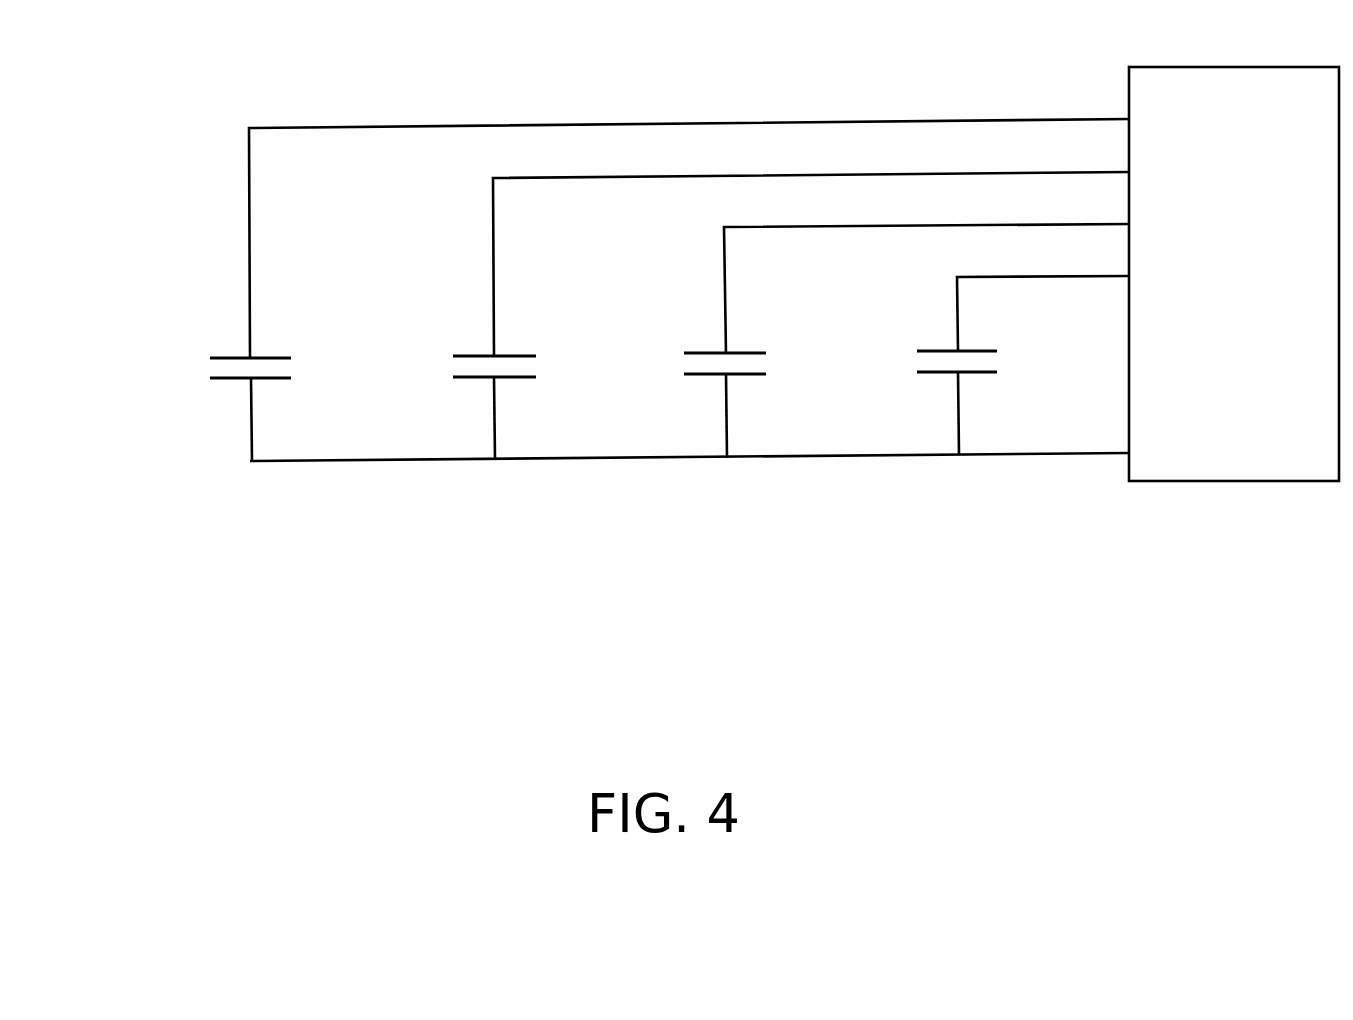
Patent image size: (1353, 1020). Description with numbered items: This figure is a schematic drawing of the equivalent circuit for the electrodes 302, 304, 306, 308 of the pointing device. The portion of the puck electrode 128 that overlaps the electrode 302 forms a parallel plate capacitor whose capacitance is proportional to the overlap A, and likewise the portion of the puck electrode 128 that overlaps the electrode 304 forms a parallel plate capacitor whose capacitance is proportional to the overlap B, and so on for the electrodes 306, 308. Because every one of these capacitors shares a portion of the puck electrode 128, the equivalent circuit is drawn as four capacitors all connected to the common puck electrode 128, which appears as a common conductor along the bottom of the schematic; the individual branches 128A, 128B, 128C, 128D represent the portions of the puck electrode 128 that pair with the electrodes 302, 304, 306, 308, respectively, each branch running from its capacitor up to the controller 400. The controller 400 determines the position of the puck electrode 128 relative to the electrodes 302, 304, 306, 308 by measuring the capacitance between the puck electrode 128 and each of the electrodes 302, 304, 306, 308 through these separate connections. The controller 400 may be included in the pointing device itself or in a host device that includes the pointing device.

The controller 400 is at (1212, 294).
The puck electrode 128 is at (704, 458).
The conductor line 128A is at (233, 382).
The conductor line 128B is at (478, 380).
The conductor line 128C is at (712, 378).
The conductor line 128D is at (943, 375).
The electrode 302 is at (223, 357).
The electrode 304 is at (470, 353).
The electrode 306 is at (702, 351).
The electrode 308 is at (933, 348).